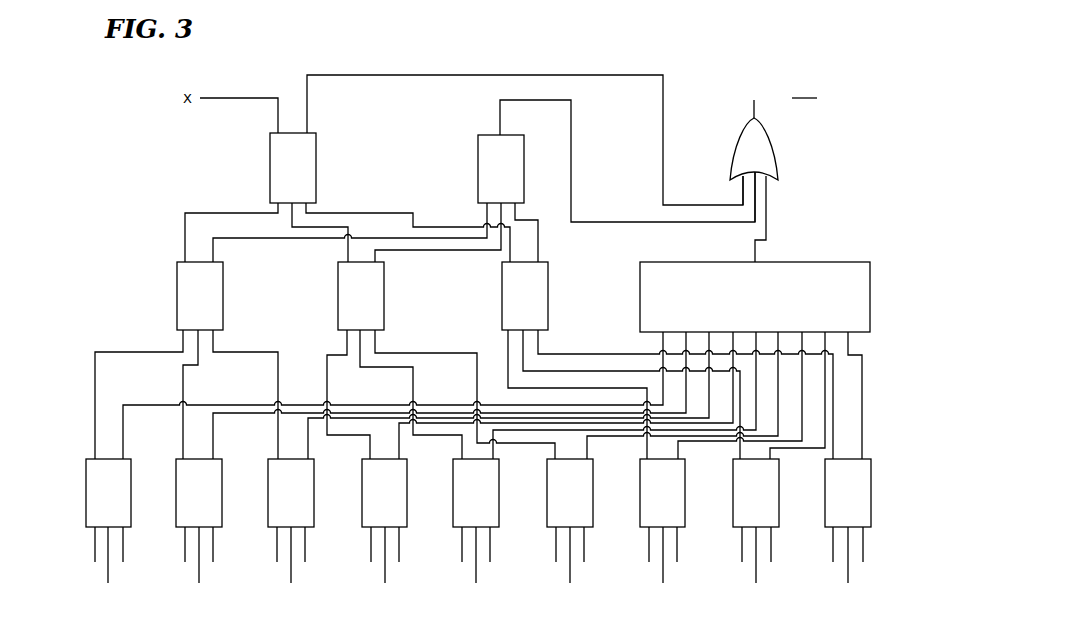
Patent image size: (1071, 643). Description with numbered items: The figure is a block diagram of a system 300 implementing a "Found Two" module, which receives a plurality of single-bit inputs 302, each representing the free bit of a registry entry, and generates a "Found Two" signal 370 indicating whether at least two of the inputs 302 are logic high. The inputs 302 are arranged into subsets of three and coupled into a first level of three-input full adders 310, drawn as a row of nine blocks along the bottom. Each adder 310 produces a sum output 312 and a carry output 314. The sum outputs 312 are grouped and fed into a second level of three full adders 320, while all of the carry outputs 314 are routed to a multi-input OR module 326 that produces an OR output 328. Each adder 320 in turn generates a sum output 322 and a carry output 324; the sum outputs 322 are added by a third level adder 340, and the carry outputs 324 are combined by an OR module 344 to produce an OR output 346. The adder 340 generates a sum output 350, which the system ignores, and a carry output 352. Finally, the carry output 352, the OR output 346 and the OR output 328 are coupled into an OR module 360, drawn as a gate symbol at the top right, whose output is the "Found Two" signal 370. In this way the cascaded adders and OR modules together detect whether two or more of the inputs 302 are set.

The system 300 is at (858, 66).
The inputs 302 is at (479, 565).
The adders 310 is at (131, 470).
The sum output 312 is at (95, 366).
The carry output 314 is at (123, 418).
The adders 320 is at (177, 287).
The sum output 322 is at (185, 218).
The carry output 324 is at (280, 238).
The OR module 326 is at (640, 287).
The OR output 328 is at (767, 228).
The adder 340 is at (270, 160).
The OR module 344 is at (478, 160).
The OR output 346 is at (572, 148).
The sum output 350 is at (273, 98).
The carry output 352 is at (394, 75).
The OR module 360 is at (779, 175).
The "Found Two" signal 370 is at (754, 100).